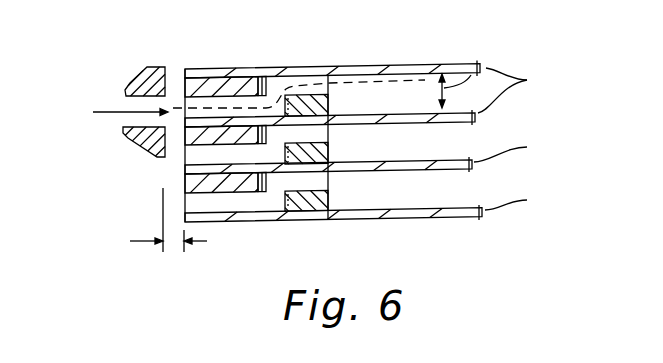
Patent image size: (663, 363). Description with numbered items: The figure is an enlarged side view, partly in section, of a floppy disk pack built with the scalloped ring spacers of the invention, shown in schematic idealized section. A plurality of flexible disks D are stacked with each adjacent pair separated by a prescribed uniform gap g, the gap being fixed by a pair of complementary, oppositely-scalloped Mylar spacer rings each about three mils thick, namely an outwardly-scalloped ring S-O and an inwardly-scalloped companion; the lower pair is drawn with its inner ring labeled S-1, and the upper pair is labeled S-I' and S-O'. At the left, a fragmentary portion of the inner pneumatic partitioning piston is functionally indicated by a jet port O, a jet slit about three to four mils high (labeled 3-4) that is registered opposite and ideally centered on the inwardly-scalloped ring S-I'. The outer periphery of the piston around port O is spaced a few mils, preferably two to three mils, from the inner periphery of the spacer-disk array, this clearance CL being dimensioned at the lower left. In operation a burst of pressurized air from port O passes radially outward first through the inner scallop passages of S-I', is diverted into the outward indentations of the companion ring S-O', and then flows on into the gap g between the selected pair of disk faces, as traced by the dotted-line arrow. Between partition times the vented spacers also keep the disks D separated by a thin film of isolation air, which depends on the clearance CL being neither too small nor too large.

The nozzle / fiber guide pieces 3-4 is at (137, 82).
The jet port O is at (114, 100).
The outwardly-scalloped spacer ring S-O' is at (332, 49).
The inwardly-scalloped spacer ring S-I' is at (292, 97).
The gap g is at (472, 65).
The flexible disk D is at (511, 135).
The outwardly-scalloped spacer ring S-O is at (328, 178).
The inner sleeve segment S-1 is at (331, 204).
The clearance CL is at (148, 220).